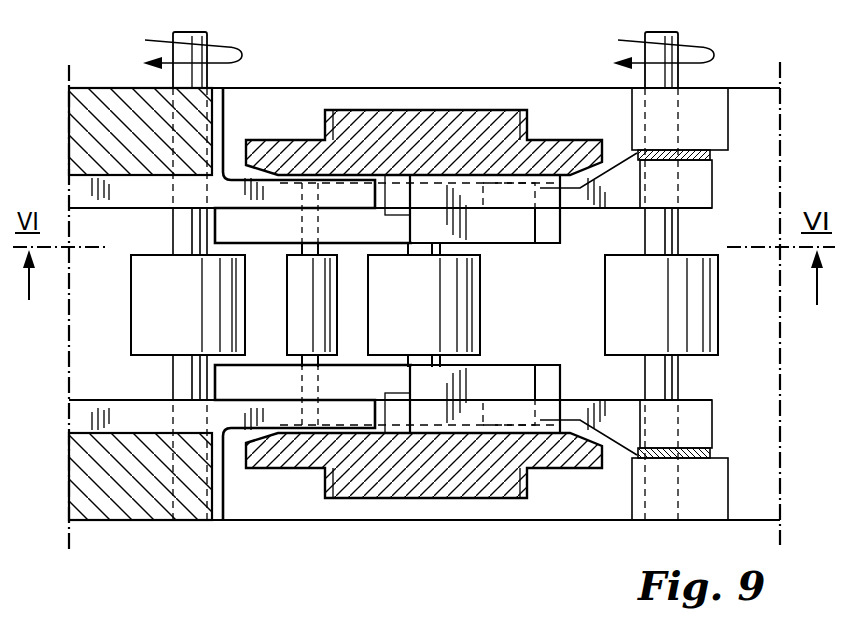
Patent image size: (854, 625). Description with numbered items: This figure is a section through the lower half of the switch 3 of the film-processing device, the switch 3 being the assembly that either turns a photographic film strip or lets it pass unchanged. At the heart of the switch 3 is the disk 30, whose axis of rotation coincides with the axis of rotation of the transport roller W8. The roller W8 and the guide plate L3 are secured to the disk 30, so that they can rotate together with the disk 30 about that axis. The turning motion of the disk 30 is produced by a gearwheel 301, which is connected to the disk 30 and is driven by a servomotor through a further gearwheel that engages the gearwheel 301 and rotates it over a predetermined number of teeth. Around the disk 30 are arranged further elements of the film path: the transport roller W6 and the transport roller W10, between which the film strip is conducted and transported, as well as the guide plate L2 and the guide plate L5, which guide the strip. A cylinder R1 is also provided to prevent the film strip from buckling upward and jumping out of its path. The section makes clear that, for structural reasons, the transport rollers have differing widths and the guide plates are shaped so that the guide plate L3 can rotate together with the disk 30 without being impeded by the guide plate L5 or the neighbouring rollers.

The switch 3 is at (97, 60).
The disk 30 is at (560, 155).
The gearwheel 301 is at (528, 118).
The guide plate L2 is at (366, 190).
The guide plate L3 is at (505, 232).
The guide plate L5 is at (578, 205).
The transport roller W6 is at (148, 306).
The cylinder R1 is at (318, 293).
The transport roller W8 is at (482, 303).
The transport roller W10 is at (698, 297).